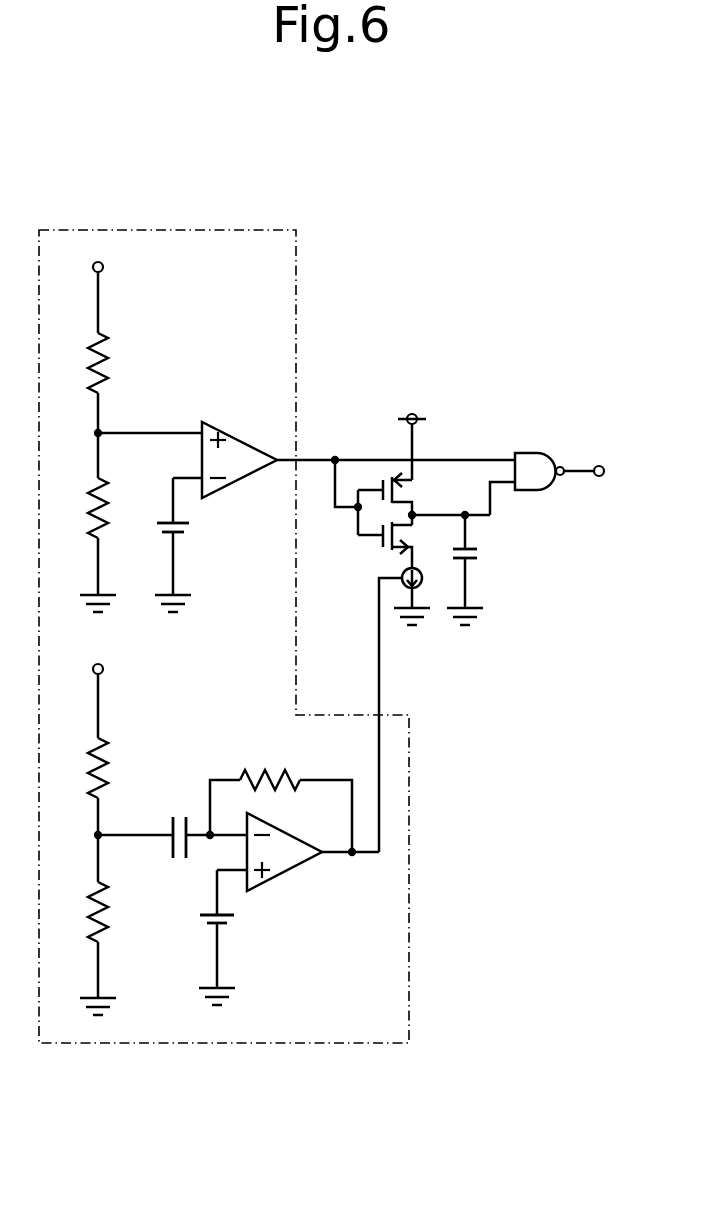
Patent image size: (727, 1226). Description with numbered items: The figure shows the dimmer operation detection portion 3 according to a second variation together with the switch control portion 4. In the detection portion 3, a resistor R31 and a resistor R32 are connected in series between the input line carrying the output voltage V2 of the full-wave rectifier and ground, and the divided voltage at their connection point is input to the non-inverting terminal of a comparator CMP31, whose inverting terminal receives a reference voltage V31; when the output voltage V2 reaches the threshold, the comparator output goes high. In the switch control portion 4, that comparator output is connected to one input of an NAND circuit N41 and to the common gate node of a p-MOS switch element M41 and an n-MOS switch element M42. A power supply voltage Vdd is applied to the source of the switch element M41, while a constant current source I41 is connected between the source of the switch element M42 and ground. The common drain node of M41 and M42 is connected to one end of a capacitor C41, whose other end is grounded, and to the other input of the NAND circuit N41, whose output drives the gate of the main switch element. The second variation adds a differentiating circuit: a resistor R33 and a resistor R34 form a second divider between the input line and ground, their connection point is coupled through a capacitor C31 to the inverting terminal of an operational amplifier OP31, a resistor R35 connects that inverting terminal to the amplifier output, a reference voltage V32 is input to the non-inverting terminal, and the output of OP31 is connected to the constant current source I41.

The dimmer operation detection portion 3 is at (275, 230).
The switch control portion 4 is at (455, 337).
The output voltage of the full-wave rectifier V2 is at (97, 487).
The resistor R31 is at (145, 405).
The resistor R32 is at (118, 545).
The comparator CMP31 is at (250, 400).
The reference voltage V31 is at (195, 545).
The power supply voltage Vdd is at (435, 440).
The switch element M41 is at (399, 496).
The switch element M42 is at (374, 547).
The constant current source I41 is at (419, 709).
The capacitor C41 is at (468, 569).
The NAND circuit N41 is at (537, 453).
The resistor R33 is at (122, 810).
The resistor R34 is at (118, 948).
The capacitor C31 is at (172, 825).
The resistor R35 is at (281, 800).
The operational amplifier OP31 is at (285, 834).
The reference voltage V32 is at (239, 937).